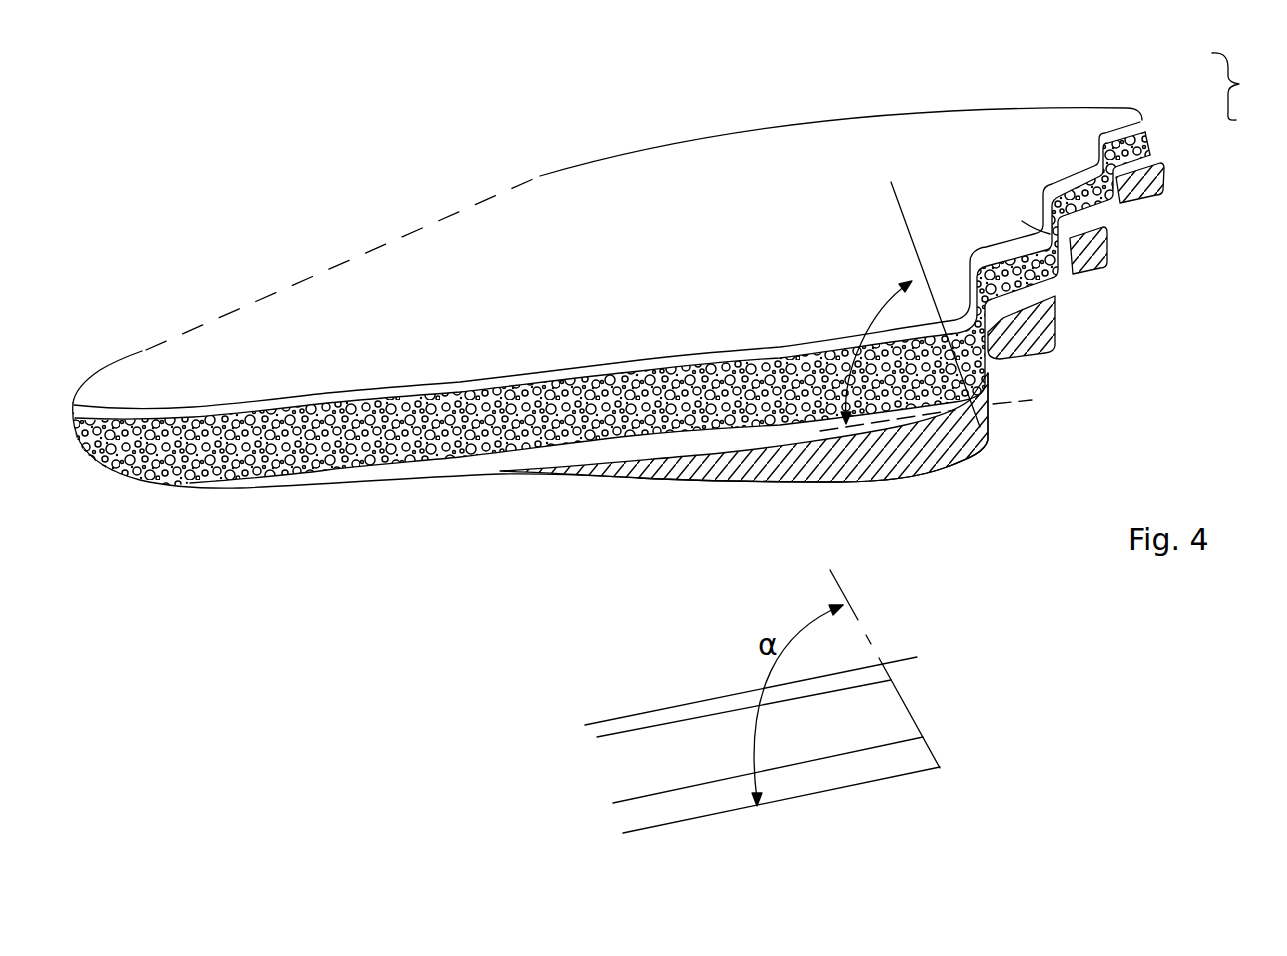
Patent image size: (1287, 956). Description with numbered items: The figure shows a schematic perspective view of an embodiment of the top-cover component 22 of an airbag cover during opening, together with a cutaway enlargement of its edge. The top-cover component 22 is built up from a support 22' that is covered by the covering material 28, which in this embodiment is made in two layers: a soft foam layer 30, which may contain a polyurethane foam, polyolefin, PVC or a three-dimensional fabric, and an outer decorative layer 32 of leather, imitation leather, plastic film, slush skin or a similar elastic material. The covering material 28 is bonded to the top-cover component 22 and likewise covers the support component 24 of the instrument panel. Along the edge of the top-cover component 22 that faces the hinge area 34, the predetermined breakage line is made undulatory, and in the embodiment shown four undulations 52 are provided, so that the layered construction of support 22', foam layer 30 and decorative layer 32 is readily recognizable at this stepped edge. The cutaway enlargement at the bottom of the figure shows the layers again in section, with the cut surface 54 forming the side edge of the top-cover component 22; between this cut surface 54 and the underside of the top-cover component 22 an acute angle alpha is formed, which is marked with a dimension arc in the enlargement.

The top-cover component 22 is at (607, 237).
The hinge area 34 is at (362, 252).
The decorative layer 32 is at (1141, 118).
The foam layer 30 is at (1148, 133).
The support 22' is at (656, 491).
The covering material 28 is at (1248, 86).
The support component 24 is at (1168, 312).
The undulations 52 is at (950, 303).
The cut surface 54 is at (912, 701).